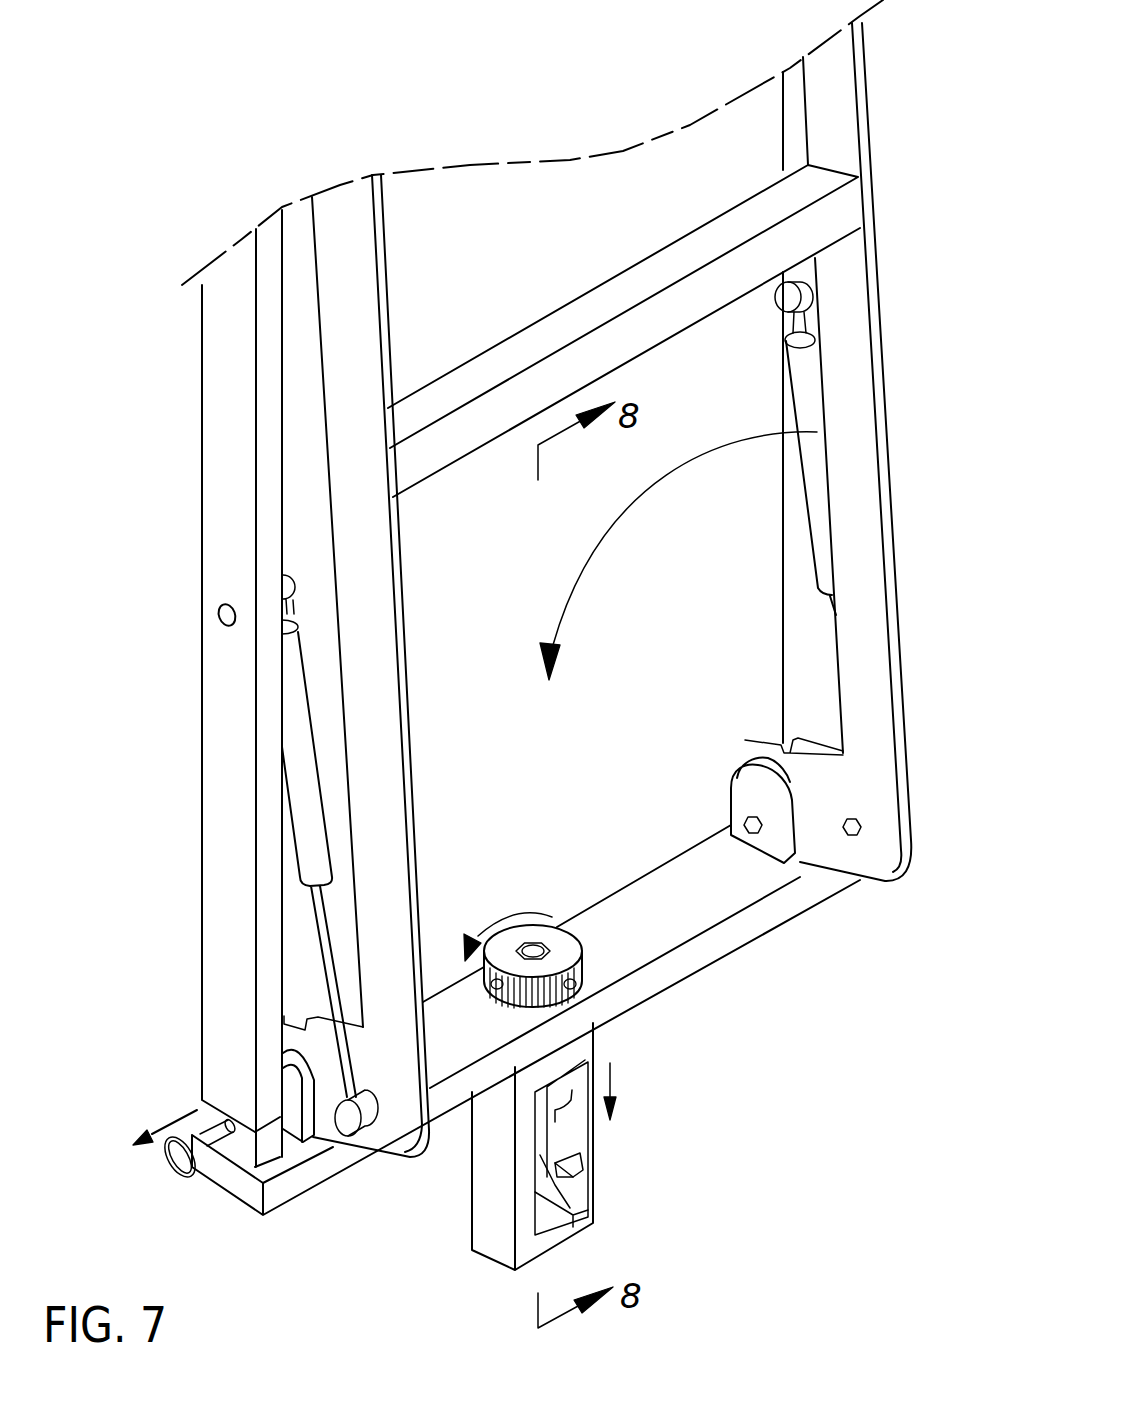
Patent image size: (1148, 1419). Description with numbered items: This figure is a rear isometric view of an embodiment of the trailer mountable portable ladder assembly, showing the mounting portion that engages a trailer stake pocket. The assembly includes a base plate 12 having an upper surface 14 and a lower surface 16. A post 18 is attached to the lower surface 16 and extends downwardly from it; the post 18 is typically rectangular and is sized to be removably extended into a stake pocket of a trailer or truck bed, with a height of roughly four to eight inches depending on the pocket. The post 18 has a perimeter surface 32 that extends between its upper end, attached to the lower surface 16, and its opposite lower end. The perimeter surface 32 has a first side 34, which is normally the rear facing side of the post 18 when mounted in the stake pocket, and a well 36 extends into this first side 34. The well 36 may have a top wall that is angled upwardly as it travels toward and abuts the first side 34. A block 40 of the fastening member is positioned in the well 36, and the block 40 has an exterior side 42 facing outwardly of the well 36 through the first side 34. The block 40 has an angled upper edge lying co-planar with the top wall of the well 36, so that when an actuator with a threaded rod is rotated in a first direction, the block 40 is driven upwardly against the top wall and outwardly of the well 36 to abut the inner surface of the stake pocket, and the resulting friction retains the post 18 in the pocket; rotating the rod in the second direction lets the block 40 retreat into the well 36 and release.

The base plate 12 is at (748, 922).
The upper surface 14 is at (658, 927).
The lower surface 16 is at (808, 905).
The post 18 is at (492, 1143).
The perimeter surface 32 is at (538, 1162).
The first side 34 is at (593, 1223).
The well 36 is at (590, 1190).
The block 40 is at (545, 1158).
The exterior side 42 is at (572, 1100).